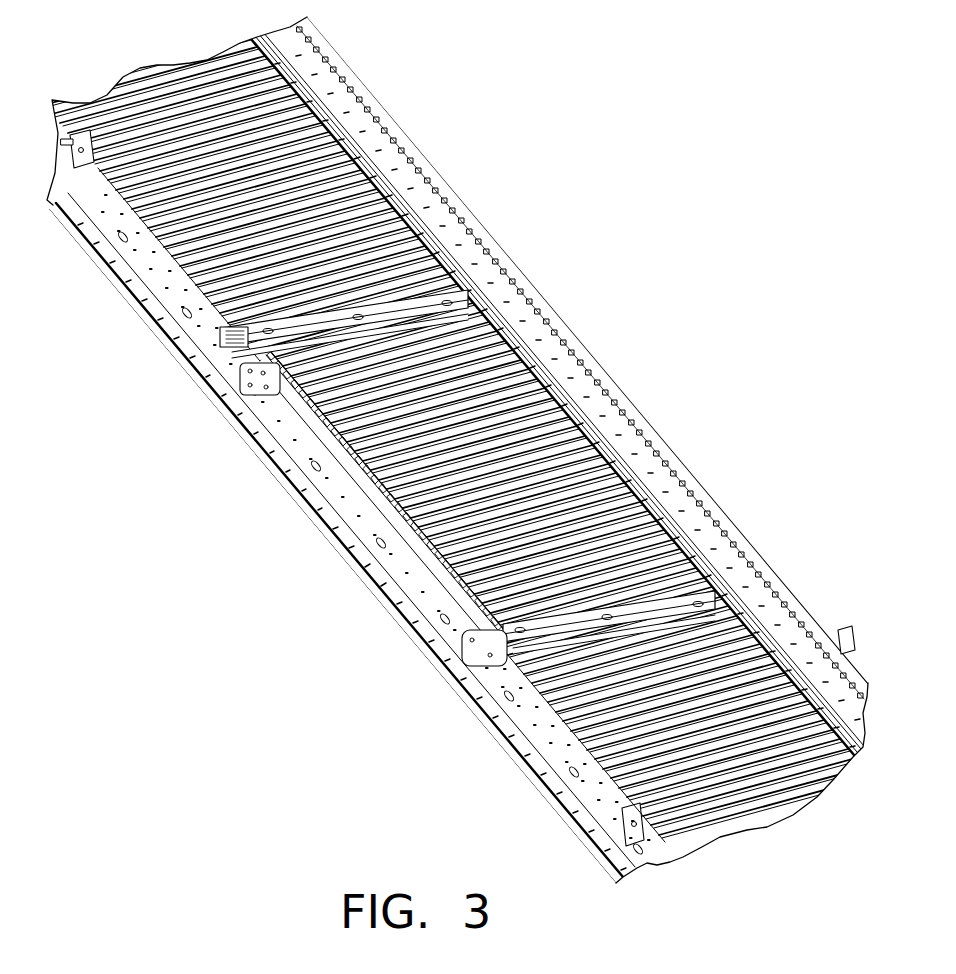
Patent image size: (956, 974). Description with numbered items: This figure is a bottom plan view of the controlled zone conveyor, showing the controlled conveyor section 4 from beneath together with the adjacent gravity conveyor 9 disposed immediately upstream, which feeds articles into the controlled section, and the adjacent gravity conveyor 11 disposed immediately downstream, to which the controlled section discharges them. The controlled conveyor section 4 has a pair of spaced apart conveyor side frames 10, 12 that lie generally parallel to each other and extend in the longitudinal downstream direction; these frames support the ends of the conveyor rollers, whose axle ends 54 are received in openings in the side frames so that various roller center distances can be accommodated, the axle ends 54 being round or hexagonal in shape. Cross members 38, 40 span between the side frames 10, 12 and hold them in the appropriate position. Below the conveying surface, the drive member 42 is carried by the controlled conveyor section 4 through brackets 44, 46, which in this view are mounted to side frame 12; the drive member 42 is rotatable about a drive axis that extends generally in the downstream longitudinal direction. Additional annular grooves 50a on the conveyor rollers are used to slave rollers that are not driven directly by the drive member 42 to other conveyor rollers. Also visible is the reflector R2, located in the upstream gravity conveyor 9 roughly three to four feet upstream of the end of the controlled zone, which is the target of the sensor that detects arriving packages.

The controlled conveyor section 4 is at (649, 296).
The gravity conveyor 9 is at (797, 556).
The conveyor side frame 10 is at (645, 423).
The gravity conveyor 11 is at (462, 124).
The conveyor side frame 12 is at (140, 300).
The cross member 38 is at (436, 297).
The cross member 40 is at (680, 603).
The drive member 42 is at (360, 487).
The bracket 44 is at (473, 660).
The bracket 46 is at (260, 387).
The annular grooves 50a is at (460, 558).
The axle ends 54 is at (503, 270).
The reflector R2 is at (853, 633).